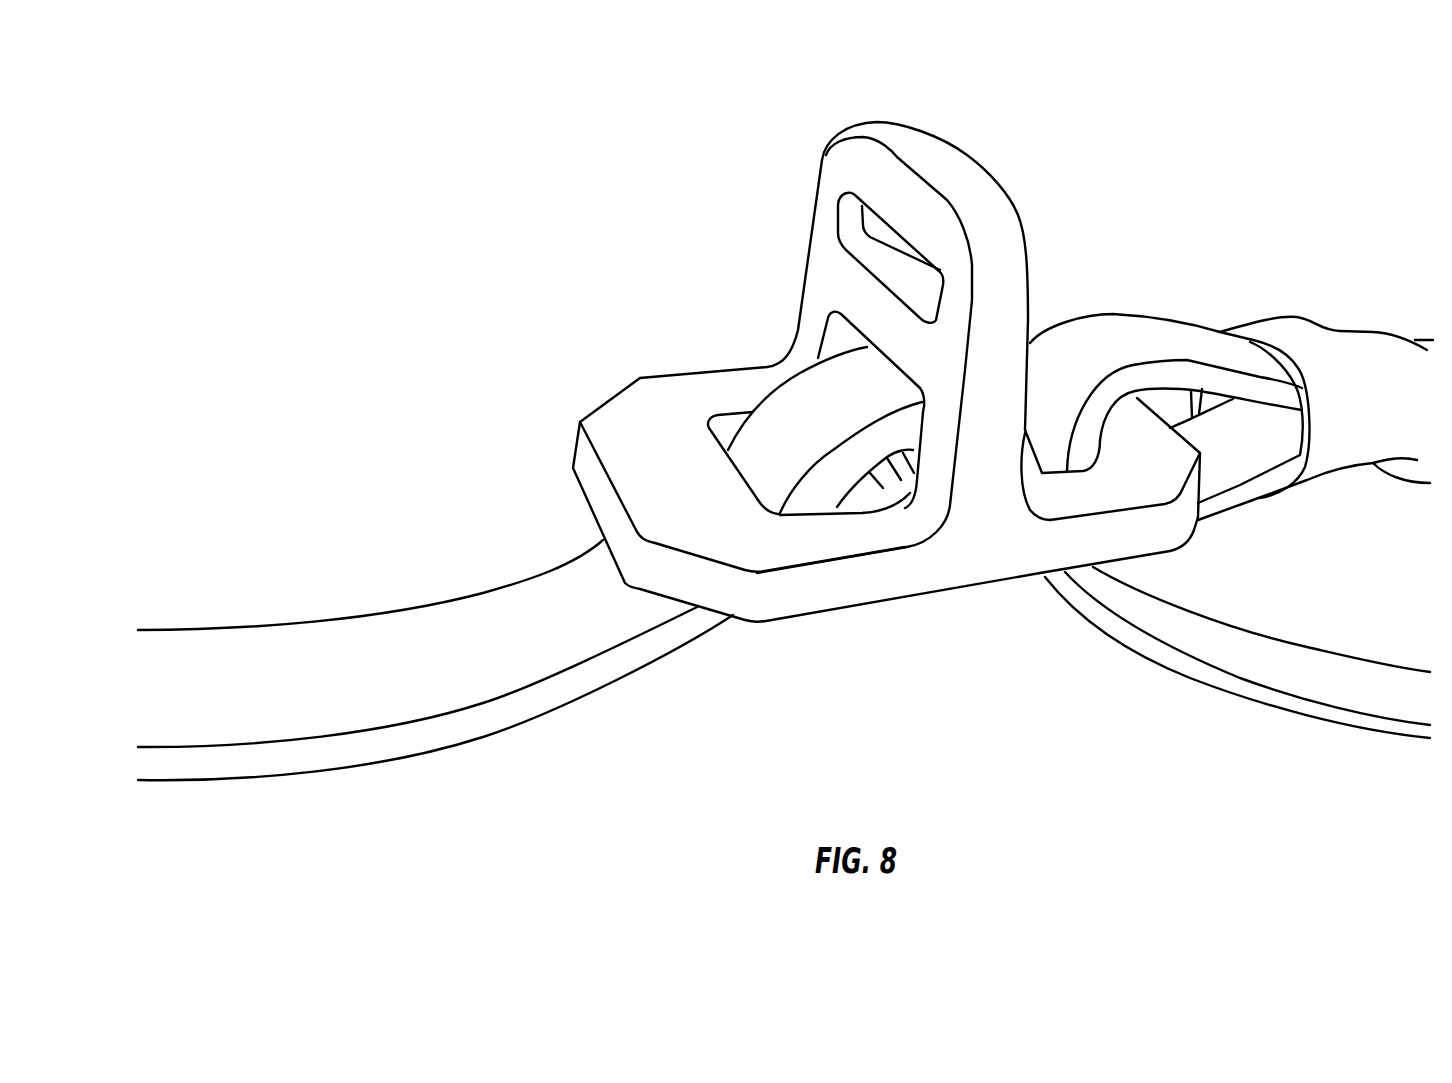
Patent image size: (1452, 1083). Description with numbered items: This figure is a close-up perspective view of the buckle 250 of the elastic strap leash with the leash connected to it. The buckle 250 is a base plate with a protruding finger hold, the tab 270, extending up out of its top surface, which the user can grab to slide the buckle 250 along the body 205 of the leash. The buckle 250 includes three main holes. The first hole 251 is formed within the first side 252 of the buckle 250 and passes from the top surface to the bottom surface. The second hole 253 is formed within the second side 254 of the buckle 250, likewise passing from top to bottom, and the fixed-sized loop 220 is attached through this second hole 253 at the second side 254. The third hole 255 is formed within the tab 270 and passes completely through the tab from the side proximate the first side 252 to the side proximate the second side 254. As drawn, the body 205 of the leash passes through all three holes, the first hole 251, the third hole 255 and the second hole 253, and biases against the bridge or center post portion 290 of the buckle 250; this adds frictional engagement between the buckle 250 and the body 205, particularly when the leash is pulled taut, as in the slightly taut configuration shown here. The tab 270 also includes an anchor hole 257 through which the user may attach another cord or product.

The body of the leash 205 is at (483, 675).
The fixed-sized loop 220 is at (1116, 303).
The buckle 250 is at (795, 253).
The first hole 251 is at (793, 518).
The first side of the buckle 252 is at (565, 505).
The second hole 253 is at (1053, 477).
The second side of the buckle 254 is at (1190, 551).
The third hole 255 is at (843, 341).
The anchor hole 257 is at (838, 203).
The tab 270 is at (1005, 311).
The center post portion 290 is at (895, 482).